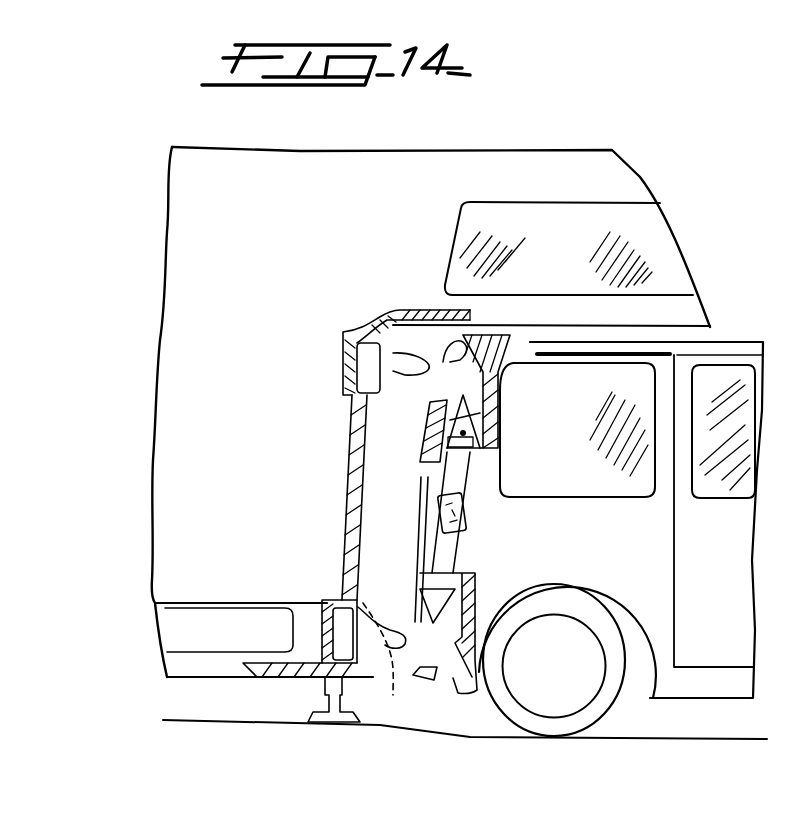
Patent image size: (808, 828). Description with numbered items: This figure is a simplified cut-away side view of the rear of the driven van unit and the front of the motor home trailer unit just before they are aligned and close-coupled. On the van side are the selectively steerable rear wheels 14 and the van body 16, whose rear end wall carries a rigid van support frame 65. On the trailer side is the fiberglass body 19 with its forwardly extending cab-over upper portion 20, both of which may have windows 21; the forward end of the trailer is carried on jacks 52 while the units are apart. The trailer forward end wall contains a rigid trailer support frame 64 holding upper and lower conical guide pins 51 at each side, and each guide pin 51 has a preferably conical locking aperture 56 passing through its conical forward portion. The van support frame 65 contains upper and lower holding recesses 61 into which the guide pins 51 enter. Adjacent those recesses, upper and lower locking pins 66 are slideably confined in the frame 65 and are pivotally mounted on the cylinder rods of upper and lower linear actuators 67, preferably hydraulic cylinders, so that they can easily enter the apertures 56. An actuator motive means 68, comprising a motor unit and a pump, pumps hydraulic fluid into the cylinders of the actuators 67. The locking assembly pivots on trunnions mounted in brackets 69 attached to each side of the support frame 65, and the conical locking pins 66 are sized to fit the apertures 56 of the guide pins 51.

The rear wheels 14 is at (597, 707).
The body 16 is at (660, 591).
The body portion 19 is at (193, 247).
The forwardly extending upper portion 20 is at (620, 185).
The windows 21 is at (663, 252).
The trailer hitch conical guide pins 51 is at (393, 371).
The jacks 52 is at (330, 687).
The locking receptacle or aperture 56 is at (384, 660).
The holding recesses 61 is at (490, 376).
The trailer support frame 64 is at (435, 310).
The van support frame 65 is at (498, 340).
The locking pins 66 is at (490, 413).
The linear actuators 67 is at (457, 478).
The actuator motive means 68 is at (468, 505).
The brackets 69 is at (430, 510).